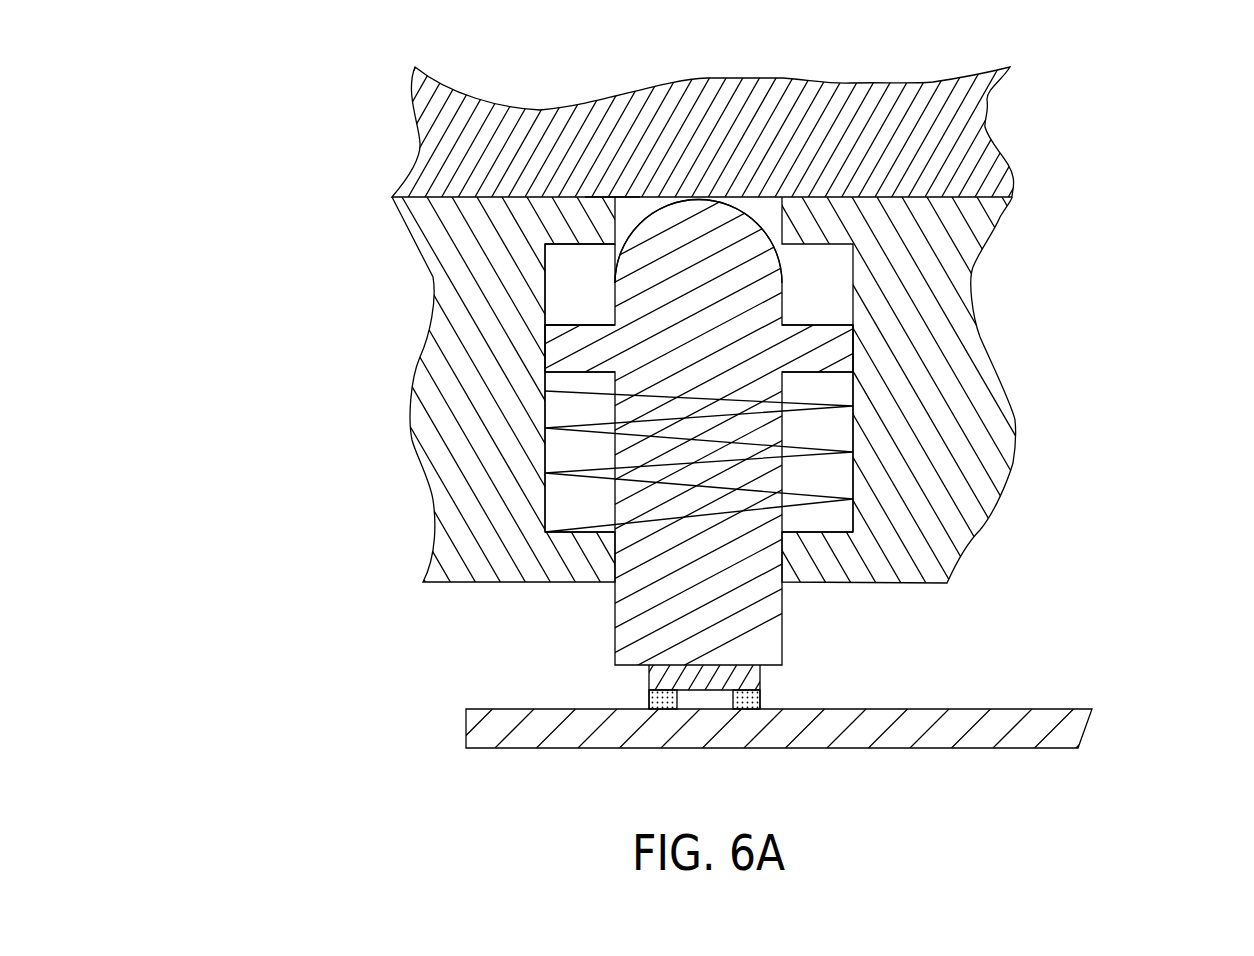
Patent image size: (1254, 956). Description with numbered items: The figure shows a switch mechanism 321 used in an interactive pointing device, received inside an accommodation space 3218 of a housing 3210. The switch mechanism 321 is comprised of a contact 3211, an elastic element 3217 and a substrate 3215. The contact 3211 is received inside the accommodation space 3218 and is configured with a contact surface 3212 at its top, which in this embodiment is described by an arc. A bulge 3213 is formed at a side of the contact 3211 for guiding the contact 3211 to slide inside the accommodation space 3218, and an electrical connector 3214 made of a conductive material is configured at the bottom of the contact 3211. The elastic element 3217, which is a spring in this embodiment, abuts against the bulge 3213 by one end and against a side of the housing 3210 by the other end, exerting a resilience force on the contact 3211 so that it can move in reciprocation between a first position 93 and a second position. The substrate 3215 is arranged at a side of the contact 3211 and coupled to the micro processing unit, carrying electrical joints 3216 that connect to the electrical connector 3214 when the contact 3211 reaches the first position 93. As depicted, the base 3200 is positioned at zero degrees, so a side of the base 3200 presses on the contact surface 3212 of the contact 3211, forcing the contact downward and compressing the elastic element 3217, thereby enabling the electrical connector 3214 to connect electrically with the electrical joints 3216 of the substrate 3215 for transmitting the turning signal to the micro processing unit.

The first position 93 is at (612, 212).
The base 3200 is at (983, 180).
The switch mechanism 321 is at (307, 268).
The housing 3210 is at (440, 460).
The contact 3211 is at (712, 287).
The contact surface 3212 is at (622, 221).
The bulge 3213 is at (823, 350).
The elastic element 3217 is at (805, 507).
The accommodation space 3218 is at (572, 284).
The electrical connector 3214 is at (747, 677).
The electrical joints 3216 is at (648, 702).
The substrate 3215 is at (1018, 727).